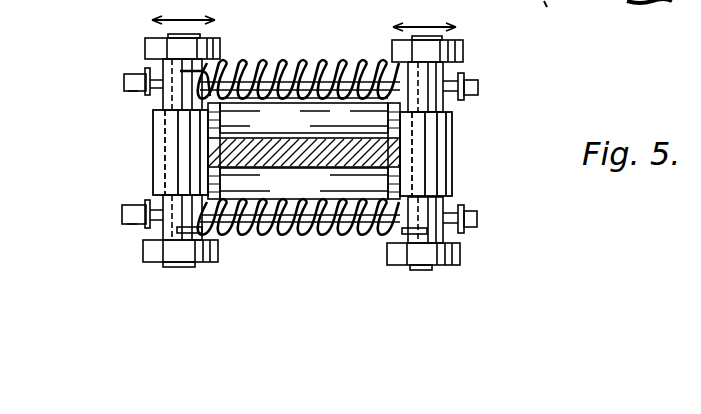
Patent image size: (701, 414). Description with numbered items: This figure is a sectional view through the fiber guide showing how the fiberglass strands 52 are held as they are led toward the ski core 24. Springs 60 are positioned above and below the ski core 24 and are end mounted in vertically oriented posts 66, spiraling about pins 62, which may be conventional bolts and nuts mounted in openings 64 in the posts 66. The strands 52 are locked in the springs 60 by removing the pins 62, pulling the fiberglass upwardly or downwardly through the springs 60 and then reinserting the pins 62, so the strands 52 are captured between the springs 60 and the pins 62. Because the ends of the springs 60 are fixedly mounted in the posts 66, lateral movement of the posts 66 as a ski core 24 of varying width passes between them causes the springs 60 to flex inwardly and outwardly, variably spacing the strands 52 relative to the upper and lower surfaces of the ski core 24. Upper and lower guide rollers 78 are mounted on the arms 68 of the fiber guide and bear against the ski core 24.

The ski core 24 is at (232, 152).
The fiberglass strands 52 is at (283, 70).
The springs 60 is at (352, 62).
The pins 62 is at (448, 83).
The openings 64 is at (172, 96).
The posts 66 is at (162, 175).
The arms 68 is at (150, 47).
The guide rollers 78 is at (306, 128).